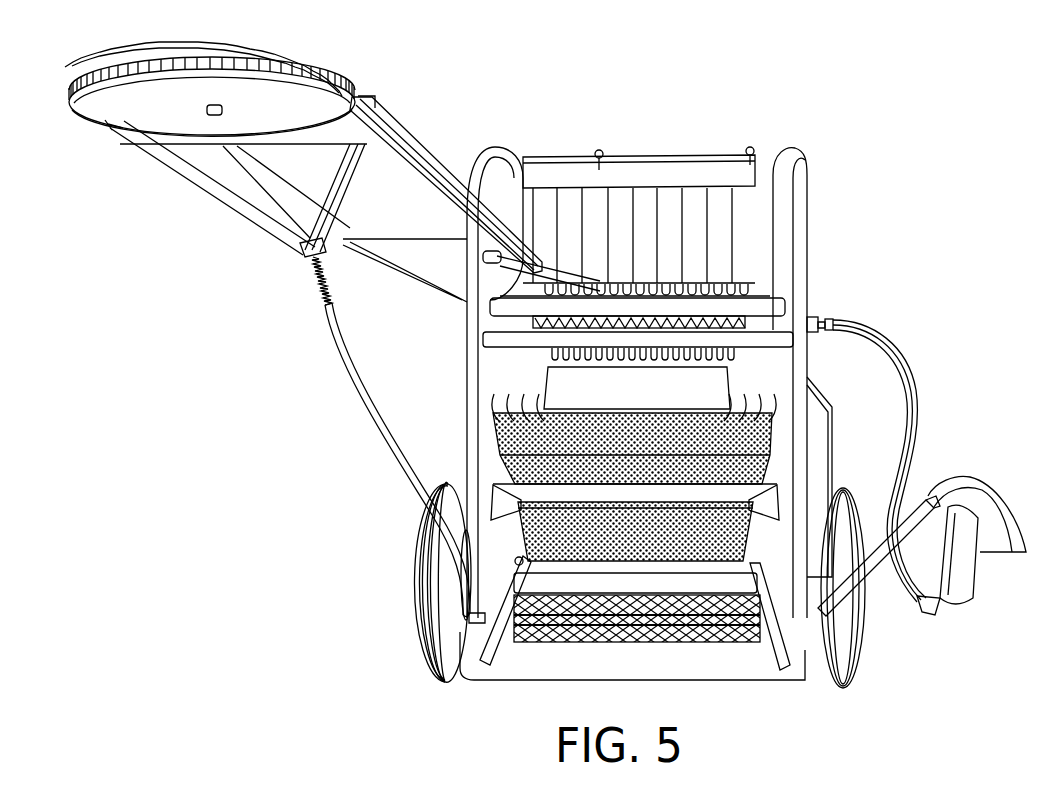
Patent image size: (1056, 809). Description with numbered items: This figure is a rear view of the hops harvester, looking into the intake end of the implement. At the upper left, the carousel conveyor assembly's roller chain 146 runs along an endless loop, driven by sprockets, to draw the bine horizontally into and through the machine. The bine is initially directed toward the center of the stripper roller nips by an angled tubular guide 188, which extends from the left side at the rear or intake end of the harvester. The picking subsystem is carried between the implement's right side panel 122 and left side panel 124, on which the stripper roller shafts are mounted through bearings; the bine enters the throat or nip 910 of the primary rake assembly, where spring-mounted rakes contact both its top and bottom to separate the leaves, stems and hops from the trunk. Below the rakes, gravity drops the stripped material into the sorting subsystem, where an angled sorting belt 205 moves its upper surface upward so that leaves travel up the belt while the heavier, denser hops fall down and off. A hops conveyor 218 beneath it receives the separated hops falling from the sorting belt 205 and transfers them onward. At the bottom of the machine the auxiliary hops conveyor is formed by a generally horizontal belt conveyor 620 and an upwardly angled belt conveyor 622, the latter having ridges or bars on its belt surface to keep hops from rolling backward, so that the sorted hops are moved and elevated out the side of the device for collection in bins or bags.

The roller chain 146 is at (352, 94).
The left side panel 124 is at (497, 163).
The nip 910 is at (668, 262).
The right side panel 122 is at (773, 167).
The angled tubular guide 188 is at (487, 263).
The sorting belt 205 is at (500, 433).
The hops conveyor 218 is at (517, 560).
The horizontal belt conveyor 620 is at (620, 657).
The upwardly angled belt conveyor 622 is at (872, 605).